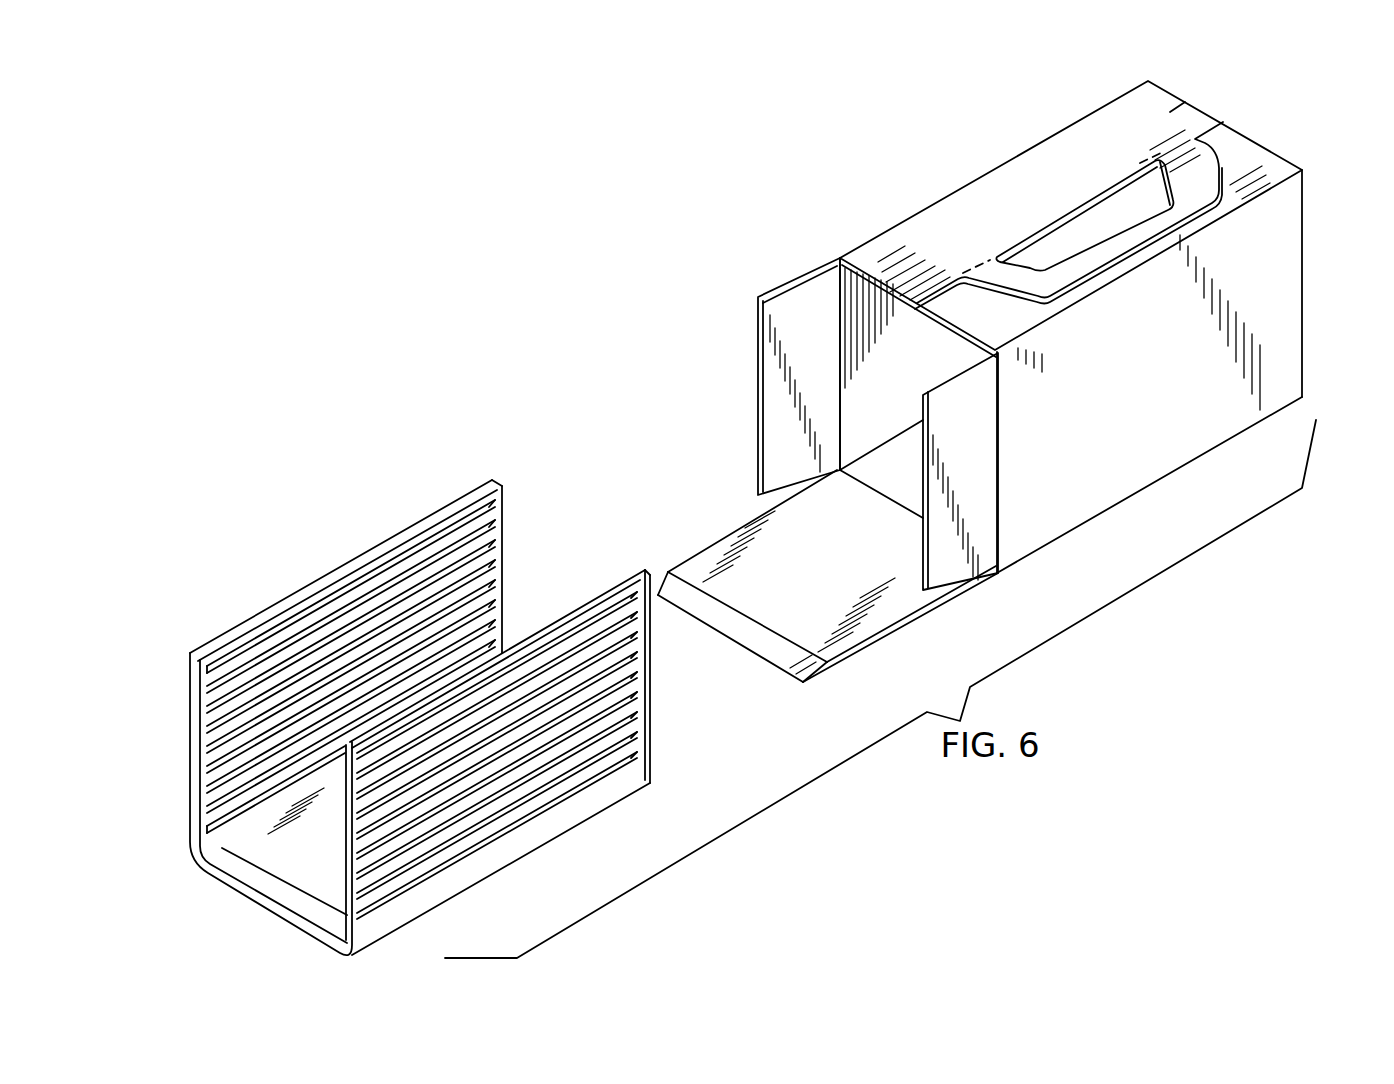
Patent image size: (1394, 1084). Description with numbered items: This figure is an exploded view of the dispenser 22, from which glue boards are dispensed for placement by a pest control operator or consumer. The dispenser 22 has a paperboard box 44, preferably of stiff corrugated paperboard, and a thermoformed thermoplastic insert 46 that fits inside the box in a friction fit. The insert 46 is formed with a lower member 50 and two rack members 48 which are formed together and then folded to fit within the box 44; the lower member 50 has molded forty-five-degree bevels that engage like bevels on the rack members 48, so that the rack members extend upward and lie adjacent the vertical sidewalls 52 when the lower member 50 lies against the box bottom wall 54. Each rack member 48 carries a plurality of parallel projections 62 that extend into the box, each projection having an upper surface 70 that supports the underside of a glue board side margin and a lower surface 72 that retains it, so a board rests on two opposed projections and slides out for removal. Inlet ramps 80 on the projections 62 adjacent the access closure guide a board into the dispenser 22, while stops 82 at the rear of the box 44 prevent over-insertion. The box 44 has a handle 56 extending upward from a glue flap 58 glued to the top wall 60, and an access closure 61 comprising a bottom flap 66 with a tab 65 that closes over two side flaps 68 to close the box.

The dispenser 22 is at (660, 238).
The box 44 is at (1153, 483).
The insert 46 is at (425, 707).
The rack members 48 is at (240, 622).
The lower member 50 is at (255, 905).
The vertical sidewalls 52 is at (1027, 347).
The box bottom wall 54 is at (887, 482).
The handle 56 is at (1198, 163).
The glue flap 58 is at (1177, 103).
The top wall 60 is at (1268, 150).
The access closure 61 is at (790, 300).
The projections 62 is at (240, 740).
The tab 65 is at (750, 663).
The bottom flap 66 is at (828, 597).
The side flaps 68 is at (758, 383).
The upper surface 70 is at (240, 705).
The lower surface 72 is at (240, 790).
The inlet ramps 80 is at (208, 660).
The stops 82 is at (490, 500).